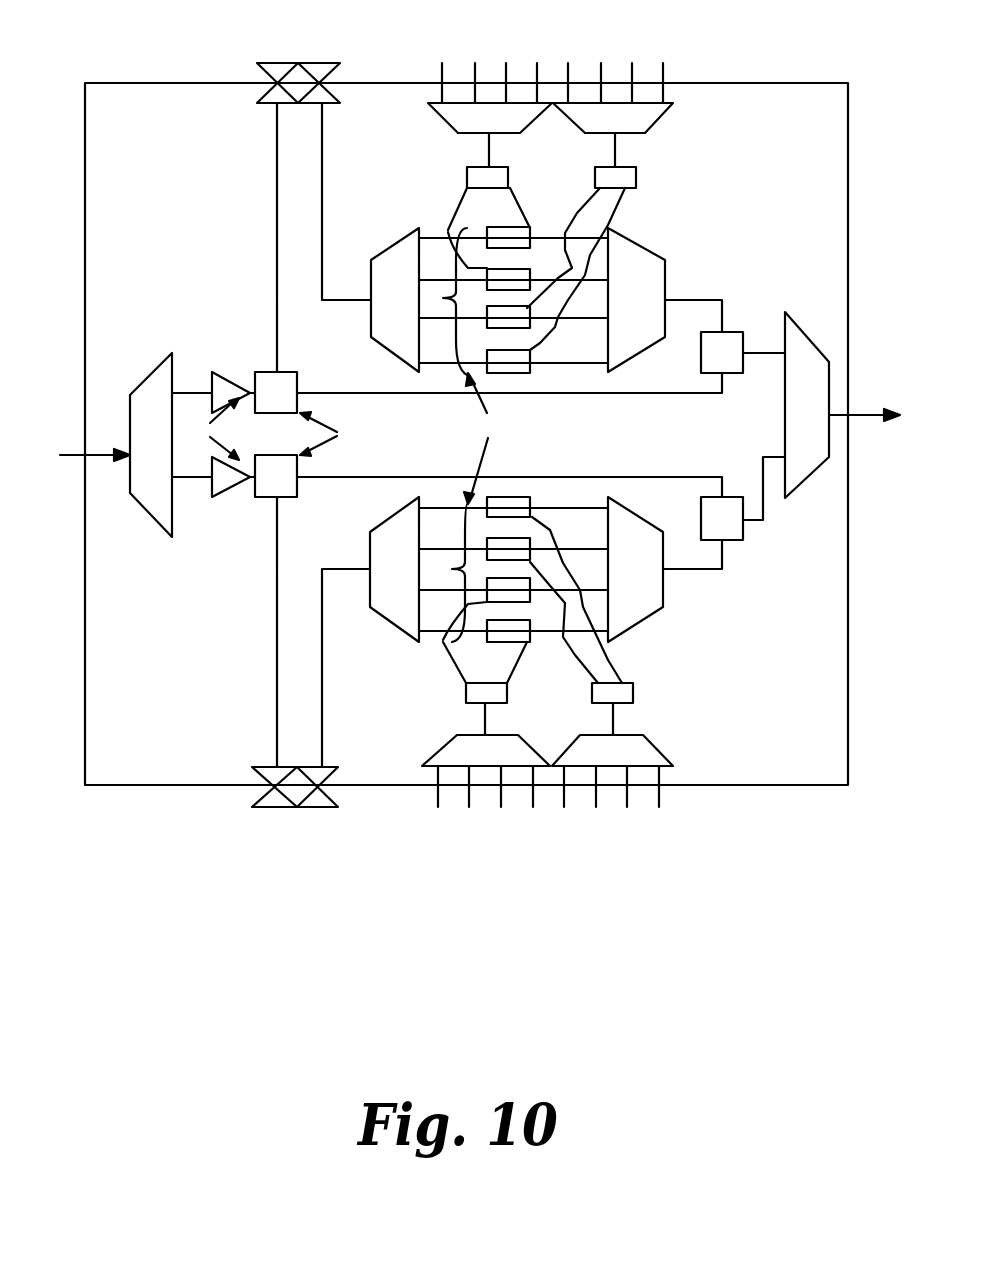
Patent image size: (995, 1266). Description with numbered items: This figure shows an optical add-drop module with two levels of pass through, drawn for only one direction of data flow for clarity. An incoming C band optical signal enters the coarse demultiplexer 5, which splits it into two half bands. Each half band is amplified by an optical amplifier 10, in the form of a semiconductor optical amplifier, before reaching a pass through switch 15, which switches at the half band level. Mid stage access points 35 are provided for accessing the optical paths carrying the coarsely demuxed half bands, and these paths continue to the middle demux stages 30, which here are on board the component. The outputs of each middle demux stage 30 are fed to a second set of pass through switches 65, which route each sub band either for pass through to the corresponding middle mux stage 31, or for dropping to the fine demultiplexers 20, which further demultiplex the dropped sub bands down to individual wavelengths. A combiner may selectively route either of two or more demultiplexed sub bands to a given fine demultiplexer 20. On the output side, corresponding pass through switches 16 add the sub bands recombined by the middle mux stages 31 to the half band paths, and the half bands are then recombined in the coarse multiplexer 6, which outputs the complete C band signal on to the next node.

The coarse demultiplexer 5 is at (157, 464).
The coarse multiplexer 6 is at (814, 419).
The optical amplifier 10 is at (222, 395).
The pass through switch 15 is at (287, 405).
The pass through switch 16 is at (733, 365).
The fine demultiplexer 20 is at (509, 130).
The middle demux stage 30 is at (407, 312).
The middle mux stage 31 is at (648, 312).
The mid stage external access interface 35 is at (295, 437).
The second set of pass through switches 65 is at (502, 177).